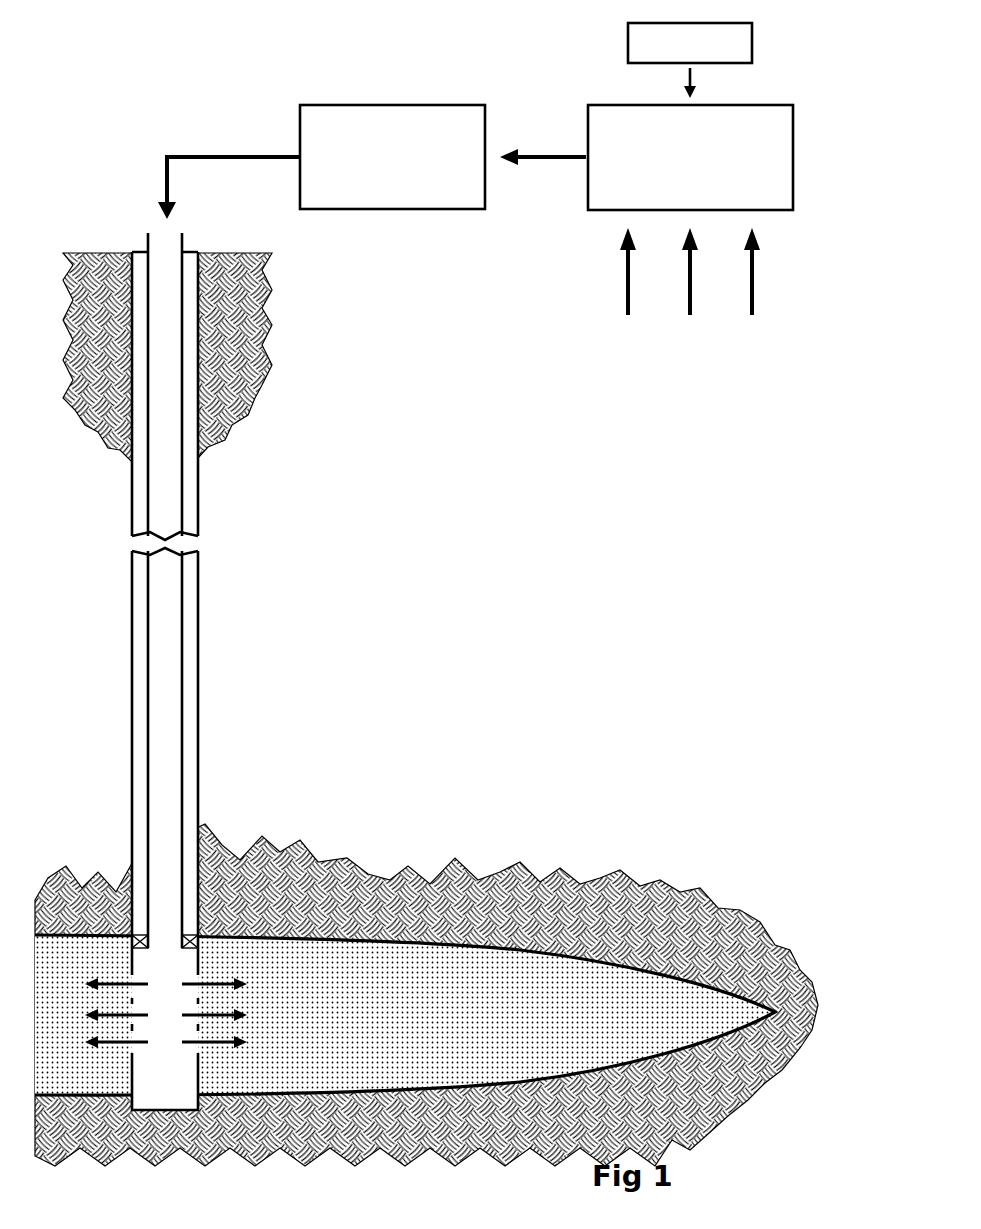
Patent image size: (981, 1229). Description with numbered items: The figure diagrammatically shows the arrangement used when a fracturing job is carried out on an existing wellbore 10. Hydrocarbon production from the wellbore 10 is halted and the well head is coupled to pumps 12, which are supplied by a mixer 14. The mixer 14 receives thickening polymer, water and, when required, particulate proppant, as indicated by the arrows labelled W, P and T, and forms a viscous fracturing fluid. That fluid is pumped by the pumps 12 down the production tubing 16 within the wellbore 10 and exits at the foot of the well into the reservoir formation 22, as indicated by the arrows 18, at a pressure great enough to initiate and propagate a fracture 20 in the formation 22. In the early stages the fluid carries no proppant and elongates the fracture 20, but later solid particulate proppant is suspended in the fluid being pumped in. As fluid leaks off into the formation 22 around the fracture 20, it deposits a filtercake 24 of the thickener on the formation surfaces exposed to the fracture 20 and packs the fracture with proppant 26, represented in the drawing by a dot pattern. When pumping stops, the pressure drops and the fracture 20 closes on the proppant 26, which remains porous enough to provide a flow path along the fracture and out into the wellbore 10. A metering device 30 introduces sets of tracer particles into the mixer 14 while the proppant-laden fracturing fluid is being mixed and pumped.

The wellbore 10 is at (212, 670).
The pumps 12 is at (321, 162).
The mixer 14 is at (646, 225).
The production tubing 16 is at (183, 497).
The arrows 18 is at (210, 1015).
The fracture 20 is at (646, 1016).
The reservoir formation 22 is at (588, 905).
The filtercake 24 is at (475, 943).
The proppant 26 is at (343, 977).
The metering device 30 is at (690, 60).